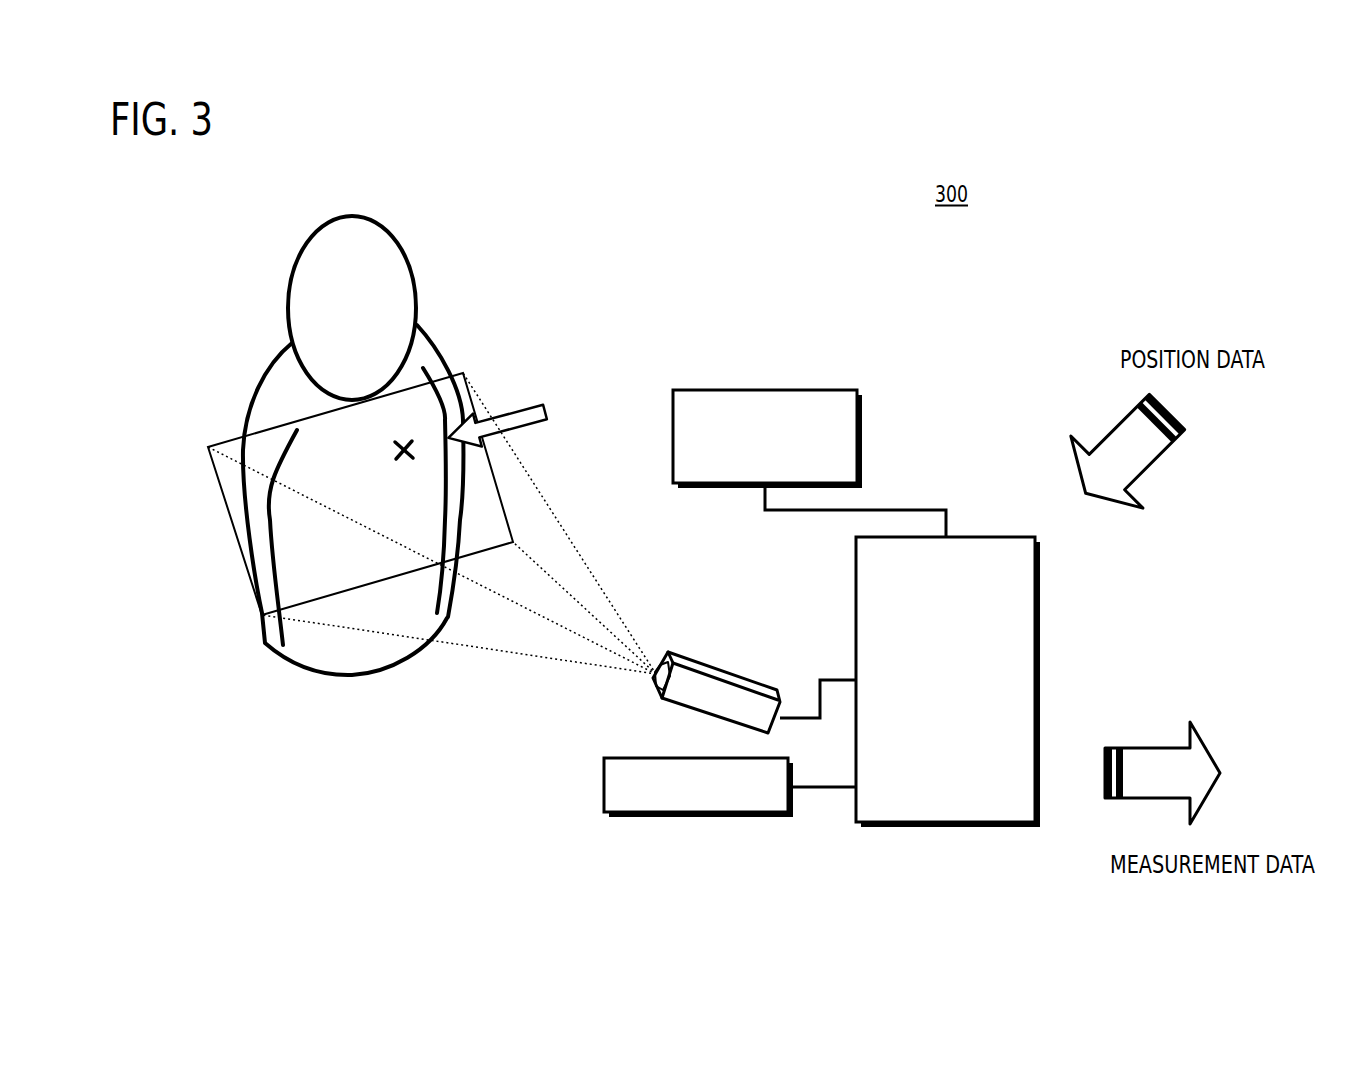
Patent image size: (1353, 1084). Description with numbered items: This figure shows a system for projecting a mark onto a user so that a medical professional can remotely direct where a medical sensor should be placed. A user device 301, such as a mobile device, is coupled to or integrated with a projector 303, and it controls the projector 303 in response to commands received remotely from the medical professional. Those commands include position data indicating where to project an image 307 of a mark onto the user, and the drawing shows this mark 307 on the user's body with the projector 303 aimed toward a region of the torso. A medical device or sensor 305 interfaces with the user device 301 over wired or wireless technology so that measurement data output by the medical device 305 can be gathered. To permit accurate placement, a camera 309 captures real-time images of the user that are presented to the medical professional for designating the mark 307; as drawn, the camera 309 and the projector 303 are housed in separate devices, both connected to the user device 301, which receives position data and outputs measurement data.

The user device 301 is at (1041, 680).
The projector 303 is at (720, 668).
The medical device (sensor) 305 is at (862, 436).
The image of a mark 307 is at (413, 437).
The camera 309 is at (697, 817).